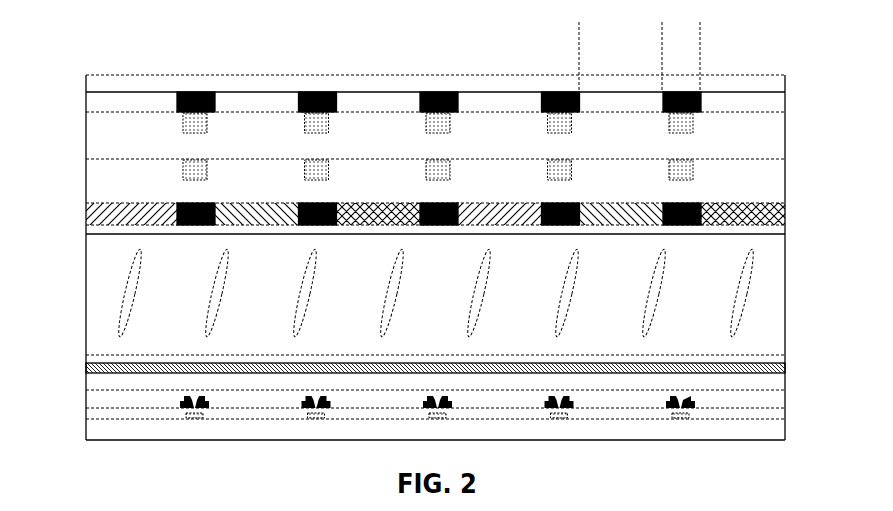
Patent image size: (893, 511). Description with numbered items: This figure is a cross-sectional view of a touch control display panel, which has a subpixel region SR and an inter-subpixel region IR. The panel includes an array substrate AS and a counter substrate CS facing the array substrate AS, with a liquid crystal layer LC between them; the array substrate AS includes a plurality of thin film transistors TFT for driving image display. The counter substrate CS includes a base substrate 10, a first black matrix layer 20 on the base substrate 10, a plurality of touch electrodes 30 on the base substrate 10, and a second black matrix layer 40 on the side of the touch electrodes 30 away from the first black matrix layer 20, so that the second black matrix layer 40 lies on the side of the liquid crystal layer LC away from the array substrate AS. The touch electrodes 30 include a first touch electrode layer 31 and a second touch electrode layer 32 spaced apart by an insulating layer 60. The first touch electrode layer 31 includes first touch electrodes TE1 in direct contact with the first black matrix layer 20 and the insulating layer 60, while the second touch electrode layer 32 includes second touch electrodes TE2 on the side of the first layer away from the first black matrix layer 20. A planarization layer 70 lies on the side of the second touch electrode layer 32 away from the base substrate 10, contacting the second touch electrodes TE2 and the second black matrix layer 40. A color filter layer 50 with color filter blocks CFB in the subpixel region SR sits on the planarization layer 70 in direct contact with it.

The base substrate 10 is at (777, 82).
The first black matrix layer 20 is at (702, 103).
The touch electrodes 30 is at (531, 156).
The first touch electrode layer 31 is at (694, 124).
The second touch electrode layer 32 is at (694, 169).
The second black matrix layer 40 is at (458, 198).
The color filter layer 50 is at (743, 212).
The insulating layer 60 is at (435, 135).
The planarization layer 70 is at (435, 181).
The first touch electrodes TE1 is at (506, 134).
The second touch electrodes TE2 is at (506, 180).
The color filter blocks CFB is at (258, 217).
The thin film transistors TFT is at (214, 410).
The counter substrate CS is at (449, 160).
The liquid crystal layer LC is at (80, 236).
The array substrate AS is at (401, 397).
The subpixel region SR is at (662, 22).
The inter-subpixel region IR is at (681, 52).